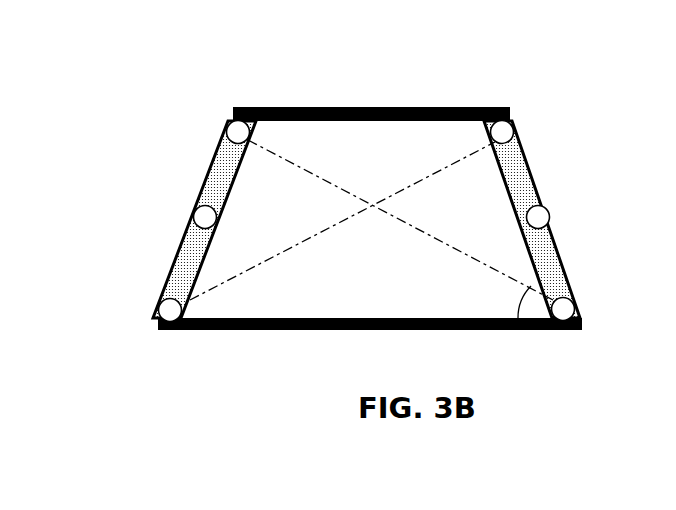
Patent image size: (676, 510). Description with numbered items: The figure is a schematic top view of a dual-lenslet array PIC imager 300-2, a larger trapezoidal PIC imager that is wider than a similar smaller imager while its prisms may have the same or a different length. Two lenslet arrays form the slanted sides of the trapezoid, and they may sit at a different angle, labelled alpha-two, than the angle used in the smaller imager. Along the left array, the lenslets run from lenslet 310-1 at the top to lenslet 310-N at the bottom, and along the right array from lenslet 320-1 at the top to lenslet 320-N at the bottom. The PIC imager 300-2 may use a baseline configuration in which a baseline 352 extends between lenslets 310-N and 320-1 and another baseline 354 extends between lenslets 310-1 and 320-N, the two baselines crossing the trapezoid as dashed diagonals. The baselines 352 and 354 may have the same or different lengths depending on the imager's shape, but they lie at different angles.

The dual-lenslet array PIC imager 300-2 is at (366, 178).
The lenslet 310-1 is at (229, 127).
The lenslet 310-N is at (160, 303).
The lenslet 320-1 is at (512, 116).
The lenslet 320-N is at (573, 300).
The baseline 352 is at (283, 252).
The baseline 354 is at (473, 250).